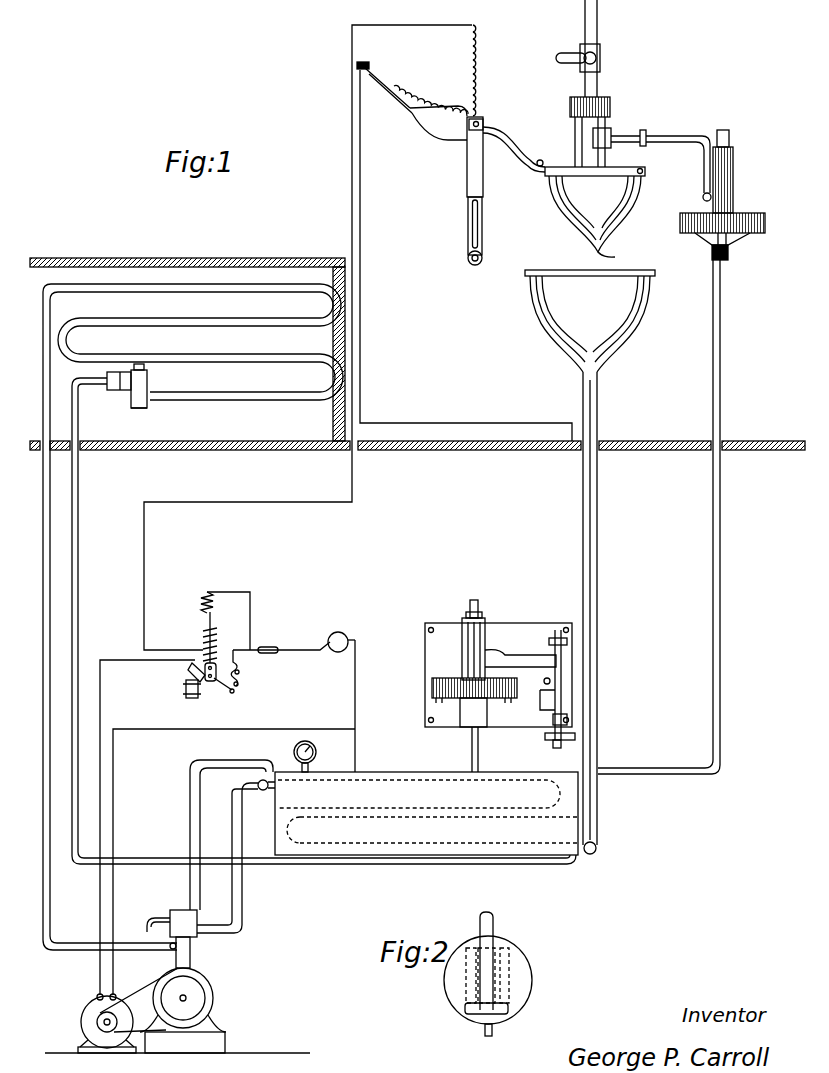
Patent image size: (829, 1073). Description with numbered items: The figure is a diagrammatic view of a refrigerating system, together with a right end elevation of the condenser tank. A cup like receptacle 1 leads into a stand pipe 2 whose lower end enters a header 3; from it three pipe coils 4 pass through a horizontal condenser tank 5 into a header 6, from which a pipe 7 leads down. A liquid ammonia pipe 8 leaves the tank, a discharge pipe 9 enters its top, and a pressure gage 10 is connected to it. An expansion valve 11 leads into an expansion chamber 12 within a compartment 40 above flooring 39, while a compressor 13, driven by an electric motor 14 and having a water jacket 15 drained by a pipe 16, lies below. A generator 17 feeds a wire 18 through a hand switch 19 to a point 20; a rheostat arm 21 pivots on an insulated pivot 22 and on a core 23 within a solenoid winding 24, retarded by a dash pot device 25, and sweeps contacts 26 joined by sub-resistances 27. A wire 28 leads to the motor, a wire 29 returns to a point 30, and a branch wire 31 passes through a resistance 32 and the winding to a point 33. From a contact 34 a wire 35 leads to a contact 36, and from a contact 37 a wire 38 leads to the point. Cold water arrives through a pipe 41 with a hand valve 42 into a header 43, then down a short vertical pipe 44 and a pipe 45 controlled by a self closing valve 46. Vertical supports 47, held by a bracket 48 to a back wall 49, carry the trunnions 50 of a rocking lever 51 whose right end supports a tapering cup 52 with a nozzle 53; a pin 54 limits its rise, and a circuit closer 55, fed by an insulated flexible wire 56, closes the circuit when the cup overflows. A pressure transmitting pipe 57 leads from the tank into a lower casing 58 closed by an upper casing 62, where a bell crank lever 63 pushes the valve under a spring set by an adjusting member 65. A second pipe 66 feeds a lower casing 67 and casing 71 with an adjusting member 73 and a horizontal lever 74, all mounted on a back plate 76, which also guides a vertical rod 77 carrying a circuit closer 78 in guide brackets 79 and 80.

In FIG. 1, the cup like receptacle 1 is at (540, 328).
In FIG. 2, the cup like receptacle 1 is at (496, 938).
In FIG. 1, the stand pipe 2 is at (598, 578).
In FIG. 1, the header 3 is at (597, 851).
In FIG. 2, the header 3 is at (497, 1012).
In FIG. 1, the pipe coils 4 is at (445, 848).
In FIG. 2, the pipe coils 4 is at (478, 990).
In FIG. 1, the horizontal condenser tank 5 is at (418, 775).
In FIG. 2, the horizontal condenser tank 5 is at (530, 995).
In FIG. 1, the header 6 is at (263, 791).
In FIG. 1, the pipe 7 is at (243, 900).
In FIG. 1, the liquid ammonia pipe 8 is at (79, 553).
In FIG. 2, the liquid ammonia pipe 8 is at (486, 1033).
In FIG. 1, the discharge pipe 9 is at (189, 818).
In FIG. 1, the pressure gage 10 is at (294, 752).
In FIG. 1, the expansion valve 11 is at (128, 398).
In FIG. 1, the expansion chamber 12 is at (228, 364).
In FIG. 1, the compressor 13 is at (212, 1028).
In FIG. 1, the electric motor 14 is at (86, 1014).
In FIG. 1, the water jacket 15 is at (178, 935).
In FIG. 1, the pipe 16 is at (147, 925).
In FIG. 1, the generator 17 is at (346, 636).
In FIG. 1, the wire 18 is at (316, 652).
In FIG. 1, the hand switch 19 is at (272, 647).
In FIG. 1, the point 20 is at (244, 658).
In FIG. 1, the arm 21 is at (232, 693).
In FIG. 1, the insulated pivot 22 is at (205, 684).
In FIG. 1, the core 23 is at (216, 664).
In FIG. 1, the solenoid winding 24 is at (202, 640).
In FIG. 1, the dash pot device 25 is at (186, 692).
In FIG. 1, the contacts 26 is at (238, 685).
In FIG. 1, the sub-resistances 27 is at (240, 672).
In FIG. 1, the wire 28 is at (101, 703).
In FIG. 1, the wire 29 is at (354, 708).
In FIG. 1, the point 30 is at (356, 735).
In FIG. 1, the branch wire 31 is at (351, 190).
In FIG. 1, the resistance 32 is at (204, 610).
In FIG. 1, the point 33 is at (473, 26).
In FIG. 1, the contact 34 is at (369, 64).
In FIG. 1, the wire 35 is at (453, 423).
In FIG. 1, the contact 36 is at (575, 736).
In FIG. 1, the contact 37 is at (548, 740).
In FIG. 1, the wire 38 is at (408, 752).
In FIG. 1, the flooring 39 is at (466, 451).
In FIG. 1, the compartment 40 is at (205, 258).
In FIG. 1, the pipe 41 is at (598, 20).
In FIG. 1, the hand valve 42 is at (560, 56).
In FIG. 1, the header 43 is at (611, 105).
In FIG. 1, the short vertical pipe 44 is at (575, 137).
In FIG. 1, the pipe 45 is at (606, 153).
In FIG. 1, the self closing valve 46 is at (614, 132).
In FIG. 1, the vertical supports 47 is at (466, 165).
In FIG. 1, the bracket 48 is at (482, 235).
In FIG. 1, the back wall 49 is at (446, 224).
In FIG. 1, the trunnions 50 is at (484, 123).
In FIG. 1, the rocking lever 51 is at (527, 162).
In FIG. 1, the cup 52 is at (565, 212).
In FIG. 1, the nozzle 53 is at (615, 257).
In FIG. 1, the pin 54 is at (540, 160).
In FIG. 1, the circuit closer 55 is at (373, 80).
In FIG. 1, the insulated flexible wire 56 is at (432, 96).
In FIG. 1, the pressure transmitting pipe 57 is at (721, 596).
In FIG. 1, the lower casing 58 is at (732, 240).
In FIG. 1, the upper casing 62 is at (734, 182).
In FIG. 1, the bell crank lever 63 is at (704, 170).
In FIG. 1, the adjusting member 65 is at (730, 136).
In FIG. 1, the pressure transmitting pipe 66 is at (479, 748).
In FIG. 1, the lower casing 67 is at (460, 706).
In FIG. 1, the casing 71 is at (486, 650).
In FIG. 1, the adjusting member 73 is at (479, 612).
In FIG. 1, the horizontal lever 74 is at (515, 657).
In FIG. 1, the back plate 76 is at (522, 623).
In FIG. 1, the vertical rod 77 is at (562, 660).
In FIG. 1, the circuit closer 78 is at (558, 755).
In FIG. 1, the guide bracket 79 is at (565, 641).
In FIG. 1, the guide bracket 80 is at (567, 719).